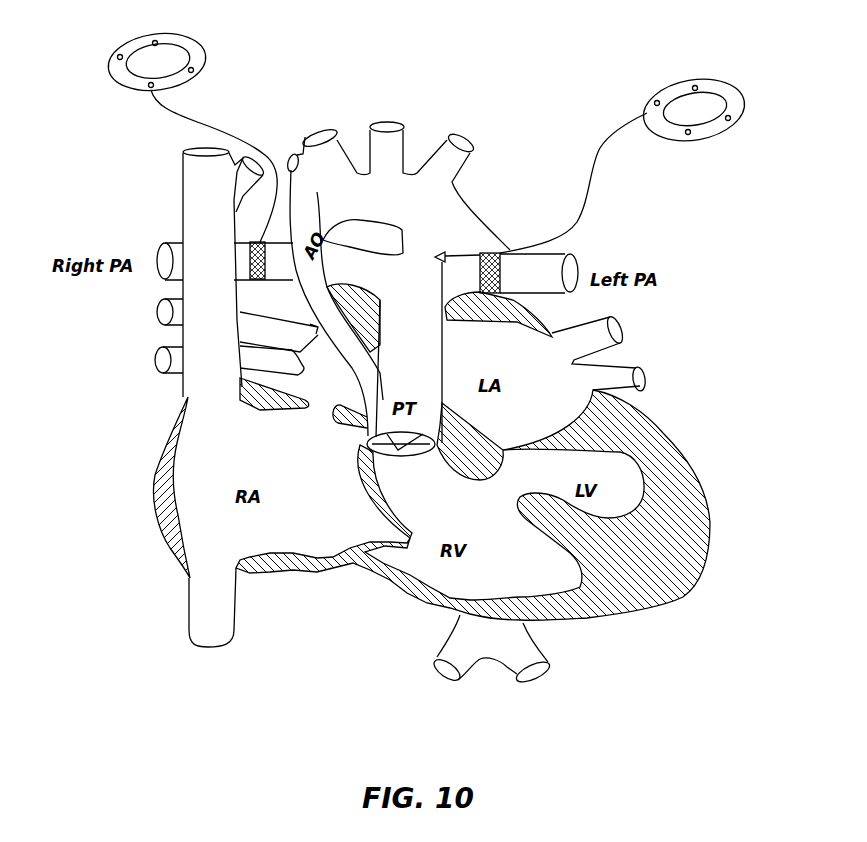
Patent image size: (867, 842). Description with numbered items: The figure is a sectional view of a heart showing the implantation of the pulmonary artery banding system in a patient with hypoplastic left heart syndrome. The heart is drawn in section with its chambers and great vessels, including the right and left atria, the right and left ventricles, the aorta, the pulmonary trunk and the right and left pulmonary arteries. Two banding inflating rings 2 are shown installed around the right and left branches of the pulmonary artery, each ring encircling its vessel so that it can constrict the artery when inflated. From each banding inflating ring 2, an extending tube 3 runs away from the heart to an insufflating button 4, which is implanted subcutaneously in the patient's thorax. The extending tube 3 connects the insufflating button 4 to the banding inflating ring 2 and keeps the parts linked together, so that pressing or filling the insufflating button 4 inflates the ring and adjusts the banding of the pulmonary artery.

The banding inflating ring 2 is at (248, 262).
The extending tube 3 is at (233, 132).
The insufflating button 4 is at (109, 63).